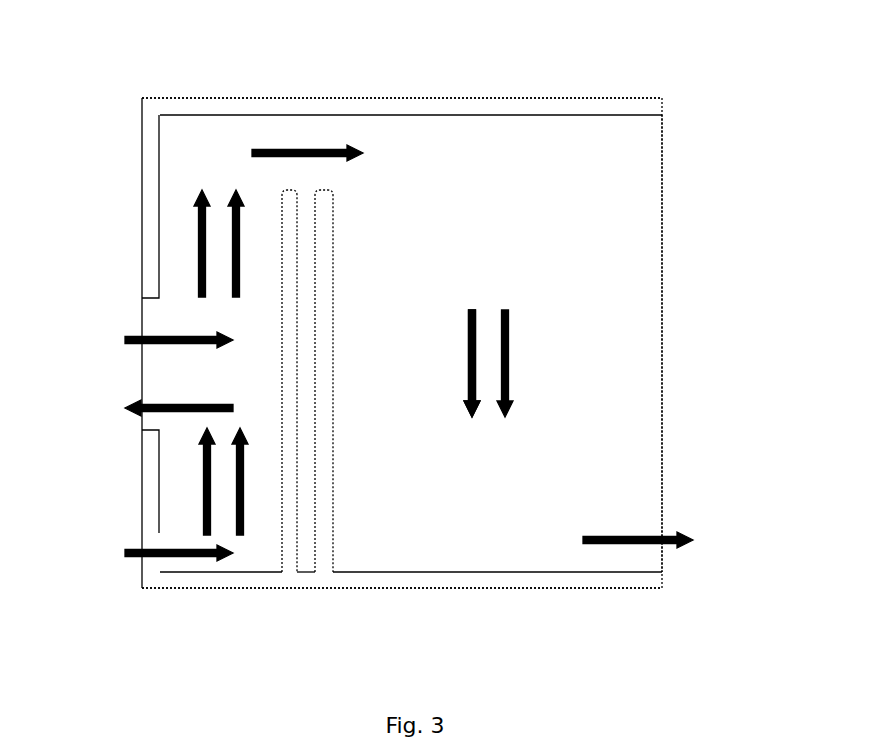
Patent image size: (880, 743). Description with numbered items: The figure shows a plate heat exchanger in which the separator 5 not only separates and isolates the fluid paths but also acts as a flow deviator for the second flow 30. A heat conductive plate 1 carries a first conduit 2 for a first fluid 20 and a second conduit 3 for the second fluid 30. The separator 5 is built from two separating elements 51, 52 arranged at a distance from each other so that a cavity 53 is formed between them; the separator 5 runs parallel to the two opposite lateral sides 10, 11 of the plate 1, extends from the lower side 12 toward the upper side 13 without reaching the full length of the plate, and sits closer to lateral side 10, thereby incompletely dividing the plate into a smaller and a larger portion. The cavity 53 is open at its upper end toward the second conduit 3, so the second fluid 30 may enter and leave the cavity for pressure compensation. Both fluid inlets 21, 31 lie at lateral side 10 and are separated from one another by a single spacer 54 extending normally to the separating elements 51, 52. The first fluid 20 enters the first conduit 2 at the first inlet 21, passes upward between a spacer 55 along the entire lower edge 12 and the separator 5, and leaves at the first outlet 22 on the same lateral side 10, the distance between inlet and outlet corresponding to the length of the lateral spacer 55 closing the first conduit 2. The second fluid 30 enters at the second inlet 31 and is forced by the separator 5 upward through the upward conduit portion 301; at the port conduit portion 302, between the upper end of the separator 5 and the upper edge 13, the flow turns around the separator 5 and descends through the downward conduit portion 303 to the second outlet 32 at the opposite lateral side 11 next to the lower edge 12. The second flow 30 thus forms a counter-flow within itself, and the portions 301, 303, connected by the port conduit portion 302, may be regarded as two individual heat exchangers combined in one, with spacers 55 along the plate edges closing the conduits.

The heat conductive plate 1 is at (487, 218).
The first conduit 2 is at (255, 560).
The second conduit 3 is at (365, 137).
The separator 5 is at (318, 613).
The lateral side 10 is at (128, 248).
The lateral side 11 is at (679, 377).
The lower side 12 is at (393, 598).
The upper side 13 is at (348, 85).
The first fluid 20 is at (200, 480).
The first inlet 21 is at (140, 545).
The first outlet 22 is at (140, 398).
The second fluid 30 is at (508, 363).
The second inlet 31 is at (140, 328).
The second outlet 32 is at (663, 527).
The separating element 51 is at (323, 492).
The separating element 52 is at (292, 416).
The cavity 53 is at (310, 265).
The single spacer 54 is at (162, 380).
The spacer 55 is at (175, 108).
The upward conduit portion 301 is at (175, 232).
The port conduit portion 302 is at (298, 135).
The downward conduit portion 303 is at (538, 318).